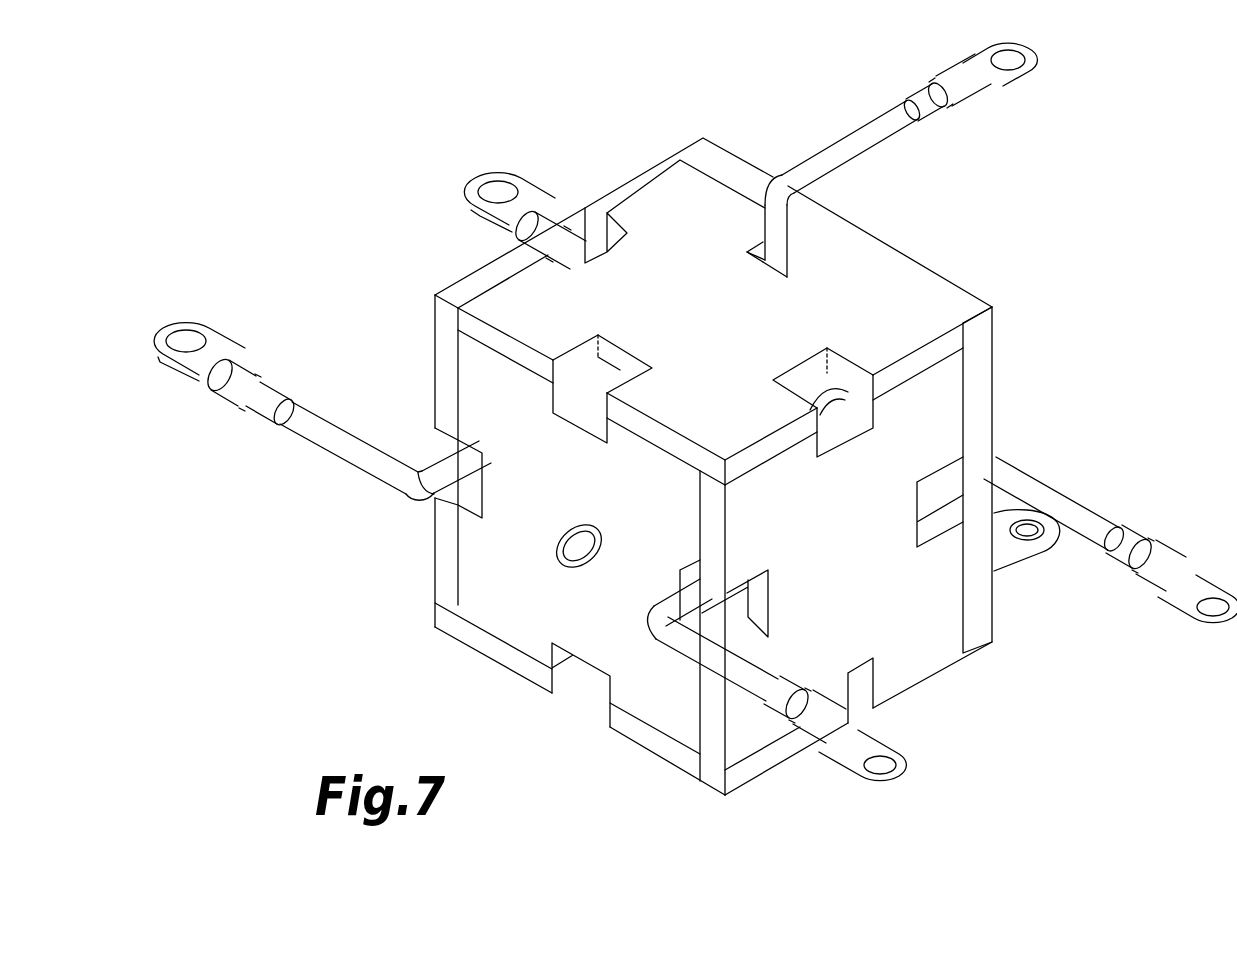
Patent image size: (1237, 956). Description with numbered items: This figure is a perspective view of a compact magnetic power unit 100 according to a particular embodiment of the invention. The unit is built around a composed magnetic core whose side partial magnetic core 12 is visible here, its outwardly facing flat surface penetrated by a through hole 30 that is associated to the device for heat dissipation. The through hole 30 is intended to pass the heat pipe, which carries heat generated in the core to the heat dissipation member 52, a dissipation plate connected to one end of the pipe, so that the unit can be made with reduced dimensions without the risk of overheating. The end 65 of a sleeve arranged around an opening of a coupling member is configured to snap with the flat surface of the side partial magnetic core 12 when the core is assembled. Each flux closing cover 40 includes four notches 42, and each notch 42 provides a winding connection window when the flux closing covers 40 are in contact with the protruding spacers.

The magnetic power unit 100 is at (1124, 186).
The side partial magnetic core 12 is at (732, 450).
The flux closing cover 40 is at (655, 222).
The notch 42 is at (590, 390).
The heat dissipation member 52 is at (978, 380).
The end of sleeve 65 is at (469, 620).
The through hole 30 is at (563, 562).